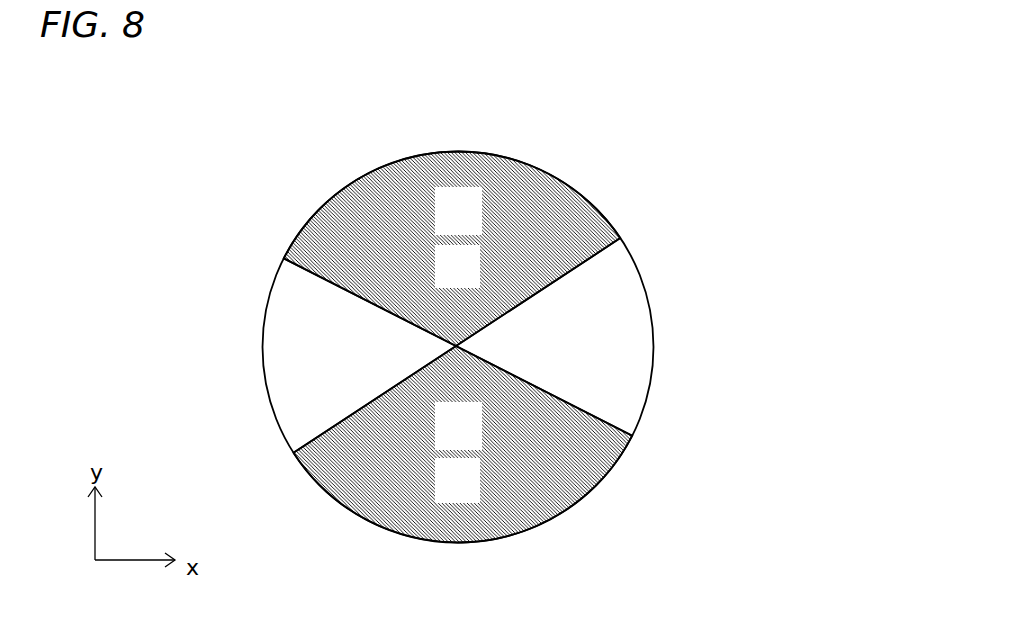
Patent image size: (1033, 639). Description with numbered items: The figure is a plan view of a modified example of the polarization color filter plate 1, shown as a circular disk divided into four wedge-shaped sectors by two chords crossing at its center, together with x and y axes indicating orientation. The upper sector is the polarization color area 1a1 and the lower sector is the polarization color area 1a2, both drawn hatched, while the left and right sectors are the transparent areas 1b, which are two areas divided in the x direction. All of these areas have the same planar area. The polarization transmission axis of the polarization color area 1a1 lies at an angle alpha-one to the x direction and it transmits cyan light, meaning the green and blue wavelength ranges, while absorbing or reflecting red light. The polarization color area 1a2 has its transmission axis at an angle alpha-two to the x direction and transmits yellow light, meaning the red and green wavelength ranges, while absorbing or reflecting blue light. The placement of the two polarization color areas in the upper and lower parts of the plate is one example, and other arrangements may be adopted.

The polarization color filter plate 1 is at (622, 237).
The polarization color area 1a1 is at (340, 190).
The polarization color area 1a2 is at (380, 527).
The transparent areas 1b is at (380, 362).